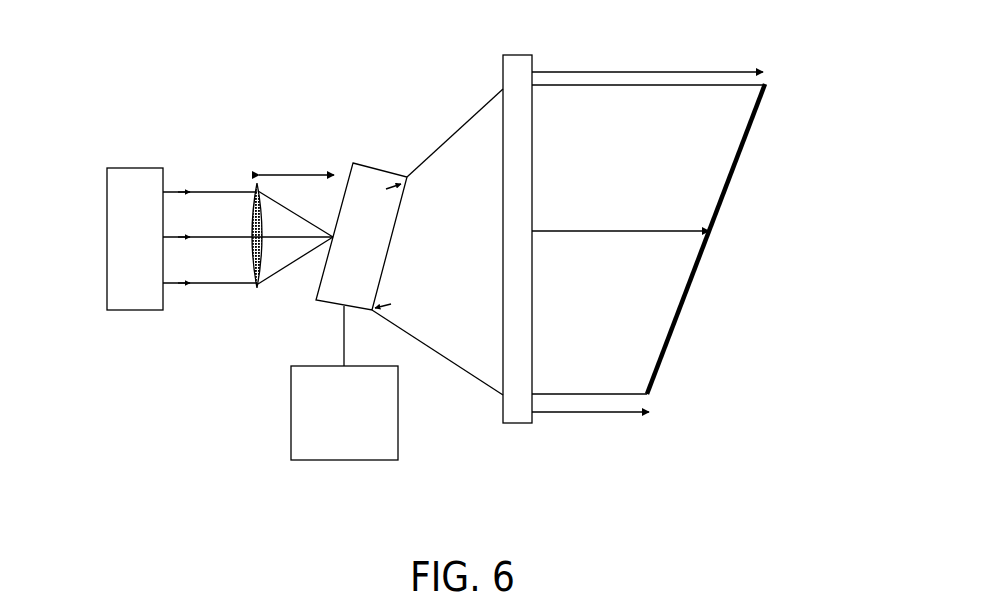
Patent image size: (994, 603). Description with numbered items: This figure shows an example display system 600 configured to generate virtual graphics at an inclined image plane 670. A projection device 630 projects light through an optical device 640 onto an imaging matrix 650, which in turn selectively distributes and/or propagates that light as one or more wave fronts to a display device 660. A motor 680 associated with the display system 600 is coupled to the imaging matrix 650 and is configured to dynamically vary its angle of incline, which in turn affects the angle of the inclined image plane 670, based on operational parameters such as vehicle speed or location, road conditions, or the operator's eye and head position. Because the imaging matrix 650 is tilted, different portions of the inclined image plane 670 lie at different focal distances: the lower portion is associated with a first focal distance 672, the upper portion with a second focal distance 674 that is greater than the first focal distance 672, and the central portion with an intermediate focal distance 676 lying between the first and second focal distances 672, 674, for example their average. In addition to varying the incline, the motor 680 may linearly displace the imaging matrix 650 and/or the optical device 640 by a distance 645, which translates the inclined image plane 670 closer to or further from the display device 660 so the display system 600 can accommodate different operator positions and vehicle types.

The display system 600 is at (118, 90).
The projection device 630 is at (135, 168).
The optical device 640 is at (256, 288).
The distance 645 is at (293, 180).
The imaging matrix 650 is at (380, 173).
The display device 660 is at (532, 290).
The inclined image plane 670 is at (726, 191).
The first focal distance 672 is at (587, 414).
The second focal distance 674 is at (607, 71).
The intermediate focal distance 676 is at (607, 230).
The motor 680 is at (344, 383).